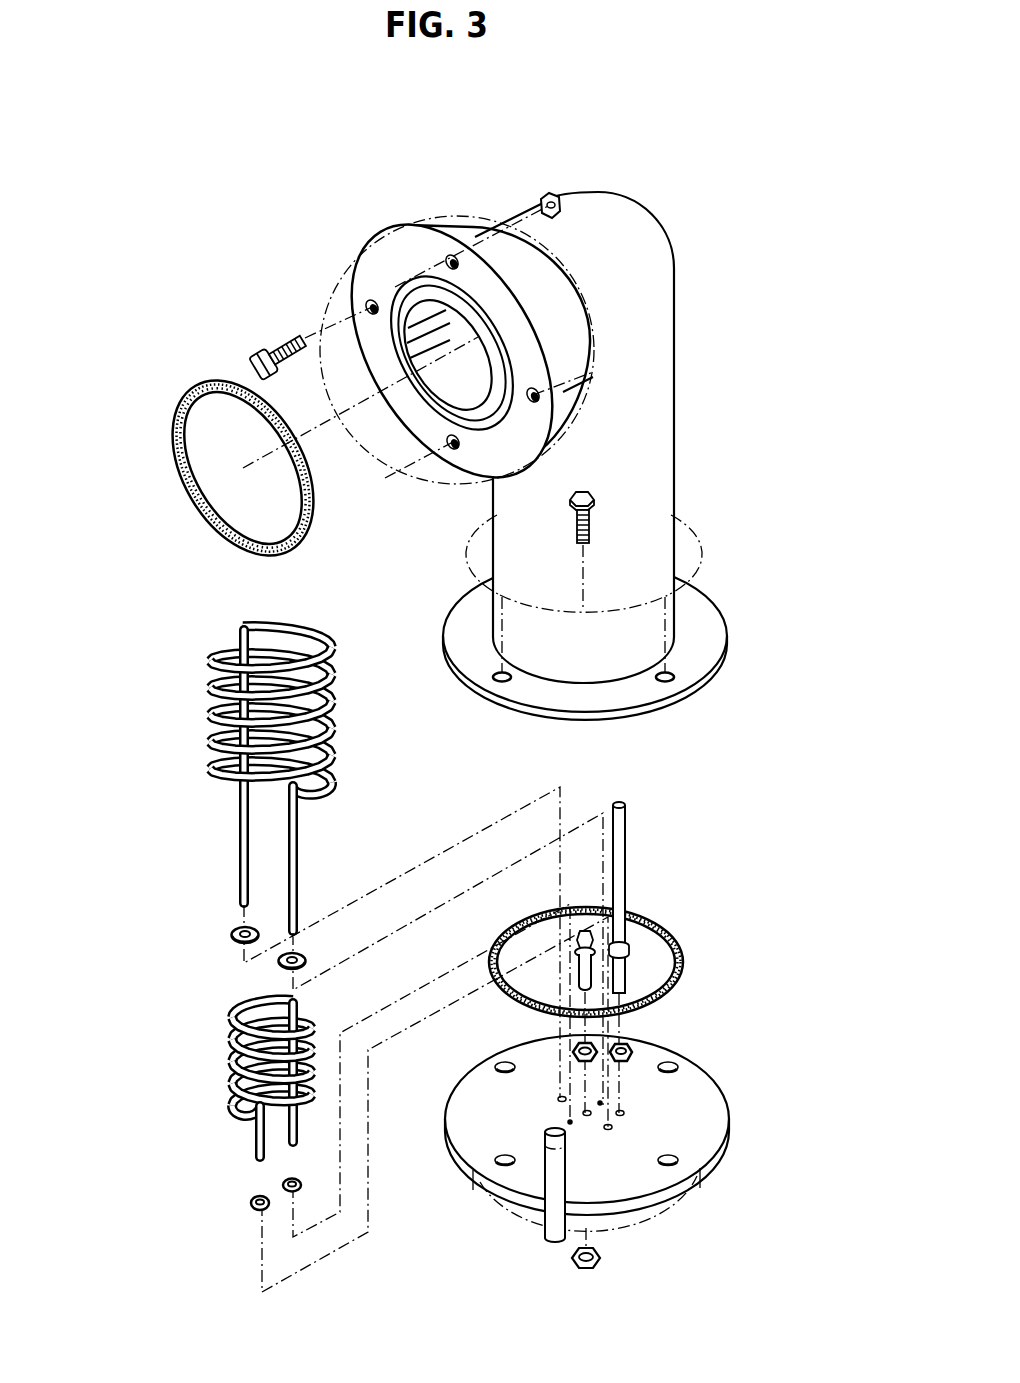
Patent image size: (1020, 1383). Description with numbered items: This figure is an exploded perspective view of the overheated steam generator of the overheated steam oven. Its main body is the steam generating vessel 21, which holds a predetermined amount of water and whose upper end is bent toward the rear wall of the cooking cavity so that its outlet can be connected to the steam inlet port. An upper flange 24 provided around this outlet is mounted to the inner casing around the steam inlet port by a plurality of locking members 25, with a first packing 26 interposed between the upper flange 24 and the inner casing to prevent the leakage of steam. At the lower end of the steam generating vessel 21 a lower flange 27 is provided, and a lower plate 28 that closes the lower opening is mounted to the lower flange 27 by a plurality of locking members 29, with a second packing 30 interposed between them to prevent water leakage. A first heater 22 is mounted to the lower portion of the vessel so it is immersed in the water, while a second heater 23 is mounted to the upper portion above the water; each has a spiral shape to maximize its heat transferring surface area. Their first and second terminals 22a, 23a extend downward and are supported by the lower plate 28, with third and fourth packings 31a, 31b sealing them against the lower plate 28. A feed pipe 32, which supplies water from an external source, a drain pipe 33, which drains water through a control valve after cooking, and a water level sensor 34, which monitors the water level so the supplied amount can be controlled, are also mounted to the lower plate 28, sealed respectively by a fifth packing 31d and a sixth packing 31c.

The steam generating vessel 21 is at (635, 227).
The first heater 22 is at (366, 1098).
The first terminal 22a is at (258, 1155).
The second heater 23 is at (241, 778).
The second terminal 23a is at (297, 860).
The upper flange 24 is at (382, 252).
The locking member 25 is at (282, 343).
The first packing 26 is at (180, 467).
The lower flange 27 is at (696, 606).
The lower plate 28 is at (712, 1097).
The locking member 29 is at (590, 522).
The second packing 30 is at (678, 948).
The third packing 31a is at (253, 1204).
The fourth packing 31b is at (236, 937).
The sixth packing 31c is at (630, 1048).
The fifth packing 31d is at (575, 1052).
The feed pipe 32 is at (583, 978).
The drain pipe 33 is at (545, 1228).
The water level sensor 34 is at (630, 850).